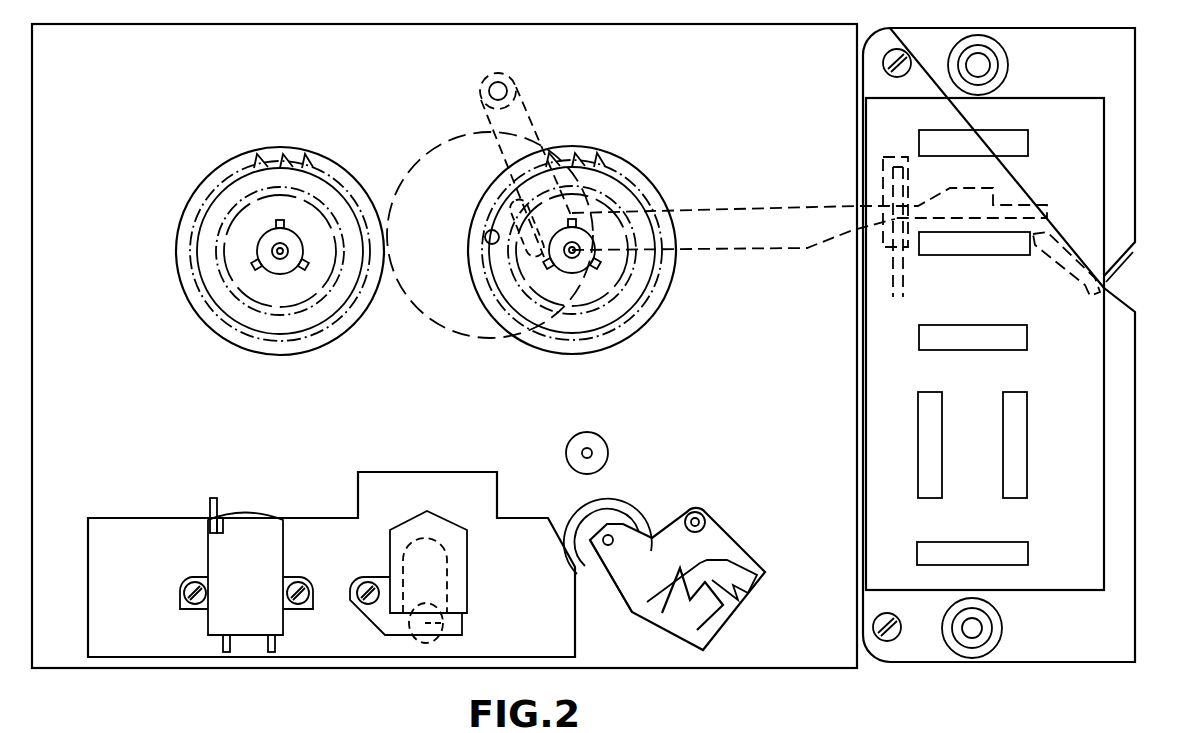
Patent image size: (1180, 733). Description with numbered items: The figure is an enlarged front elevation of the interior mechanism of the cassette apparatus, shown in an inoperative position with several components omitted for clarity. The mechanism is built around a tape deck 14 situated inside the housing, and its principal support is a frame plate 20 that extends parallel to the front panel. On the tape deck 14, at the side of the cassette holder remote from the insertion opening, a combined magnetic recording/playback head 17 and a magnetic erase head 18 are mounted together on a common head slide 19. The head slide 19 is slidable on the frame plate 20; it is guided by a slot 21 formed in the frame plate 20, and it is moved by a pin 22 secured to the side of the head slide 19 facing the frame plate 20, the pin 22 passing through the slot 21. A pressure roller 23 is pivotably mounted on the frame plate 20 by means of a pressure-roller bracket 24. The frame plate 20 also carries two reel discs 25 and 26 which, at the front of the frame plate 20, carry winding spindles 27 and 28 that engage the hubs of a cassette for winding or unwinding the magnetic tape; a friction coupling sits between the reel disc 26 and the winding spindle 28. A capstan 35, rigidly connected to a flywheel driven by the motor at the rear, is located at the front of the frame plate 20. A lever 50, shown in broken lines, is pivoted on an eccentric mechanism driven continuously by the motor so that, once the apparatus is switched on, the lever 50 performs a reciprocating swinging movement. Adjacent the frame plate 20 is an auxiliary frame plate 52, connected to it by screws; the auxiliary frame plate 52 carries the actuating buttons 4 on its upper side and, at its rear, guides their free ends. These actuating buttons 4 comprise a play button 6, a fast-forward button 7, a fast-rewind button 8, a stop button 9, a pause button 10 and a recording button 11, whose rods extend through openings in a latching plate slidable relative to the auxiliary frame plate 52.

The actuating buttons 4 is at (1058, 503).
The play button 6 is at (1026, 338).
The fast-forward button 7 is at (1020, 419).
The fast-rewind button 8 is at (934, 419).
The stop button 9 is at (1026, 554).
The pause button 10 is at (944, 246).
The recording button 11 is at (1028, 143).
The tape deck 14 is at (680, 604).
The combined magnetic recording/playback head 17 is at (458, 557).
The magnetic erase head 18 is at (275, 547).
The head slide 19 is at (333, 645).
The frame plate 20 is at (717, 658).
The slot 21 is at (433, 543).
The pin 22 is at (462, 621).
The pressure roller 23 is at (608, 497).
The pressure-roller bracket 24 is at (620, 583).
The reel disc 25 is at (213, 172).
The reel disc 26 is at (633, 160).
The winding spindle 27 is at (293, 248).
The winding spindle 28 is at (592, 245).
The capstan 35 is at (582, 452).
The lever 50 is at (735, 225).
The auxiliary frame plate 52 is at (1108, 483).